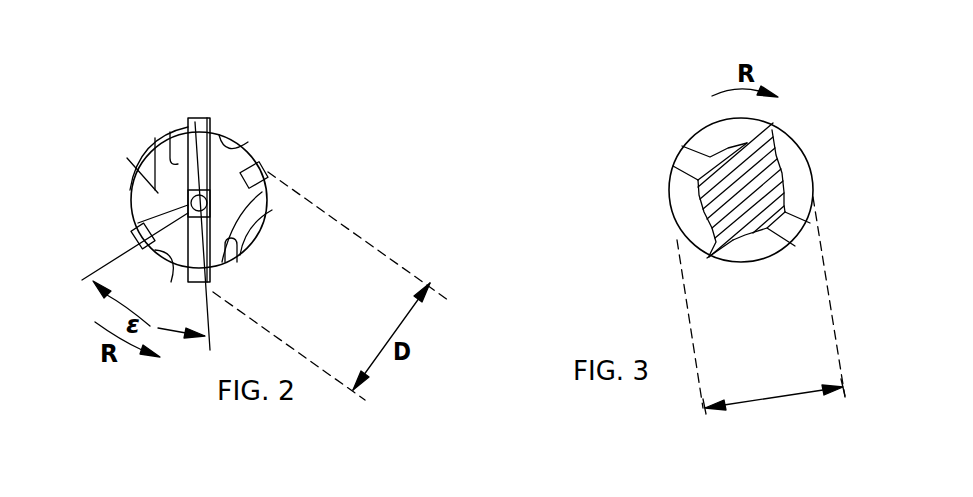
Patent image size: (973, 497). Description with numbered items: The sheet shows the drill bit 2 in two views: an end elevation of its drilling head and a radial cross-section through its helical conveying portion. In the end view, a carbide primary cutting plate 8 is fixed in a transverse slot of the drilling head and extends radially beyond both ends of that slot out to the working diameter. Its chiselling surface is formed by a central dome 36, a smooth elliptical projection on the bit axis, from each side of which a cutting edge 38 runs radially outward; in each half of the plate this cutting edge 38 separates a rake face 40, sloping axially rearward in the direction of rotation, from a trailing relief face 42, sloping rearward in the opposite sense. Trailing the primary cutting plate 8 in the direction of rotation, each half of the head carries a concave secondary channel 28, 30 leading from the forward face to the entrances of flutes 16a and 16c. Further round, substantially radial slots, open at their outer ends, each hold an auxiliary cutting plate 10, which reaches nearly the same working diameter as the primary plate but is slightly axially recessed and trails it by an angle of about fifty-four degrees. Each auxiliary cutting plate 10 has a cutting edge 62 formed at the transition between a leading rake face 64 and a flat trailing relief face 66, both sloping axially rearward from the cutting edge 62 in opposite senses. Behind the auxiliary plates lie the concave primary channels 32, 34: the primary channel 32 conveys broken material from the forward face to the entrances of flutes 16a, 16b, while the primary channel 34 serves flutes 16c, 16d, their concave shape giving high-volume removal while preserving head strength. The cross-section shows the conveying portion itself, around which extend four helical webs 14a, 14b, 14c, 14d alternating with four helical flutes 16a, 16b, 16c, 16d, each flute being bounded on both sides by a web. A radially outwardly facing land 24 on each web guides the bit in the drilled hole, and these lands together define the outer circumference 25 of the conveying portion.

In FIG. 2, the drill bit 2 is at (258, 163).
In FIG. 2, the primary cutting plate 8 is at (210, 206).
In FIG. 2, the auxiliary cutting plates 10 is at (132, 238).
In FIG. 2, the secondary channel 28 is at (230, 166).
In FIG. 2, the secondary channel 30 is at (168, 266).
In FIG. 2, the primary channel 32 is at (253, 213).
In FIG. 2, the primary channel 34 is at (147, 163).
In FIG. 2, the central dome 36 is at (152, 167).
In FIG. 2, the cutting edge 38 is at (223, 123).
In FIG. 2, the rake face 40 is at (185, 127).
In FIG. 2, the relief face 42 is at (202, 130).
In FIG. 2, the cutting edge 62 is at (137, 228).
In FIG. 2, the rake face 64 is at (262, 162).
In FIG. 2, the relief face 66 is at (140, 222).
In FIG. 3, the helical web 14a is at (747, 143).
In FIG. 3, the helical web 14b is at (688, 155).
In FIG. 3, the helical web 14c is at (733, 247).
In FIG. 3, the helical web 14d is at (790, 215).
In FIG. 3, the helical flute 16a is at (718, 135).
In FIG. 3, the helical flute 16b is at (685, 200).
In FIG. 3, the helical flute 16c is at (762, 247).
In FIG. 3, the helical flute 16d is at (790, 188).
In FIG. 3, the land 24 is at (677, 157).
In FIG. 3, the outer circumference 25 is at (774, 389).